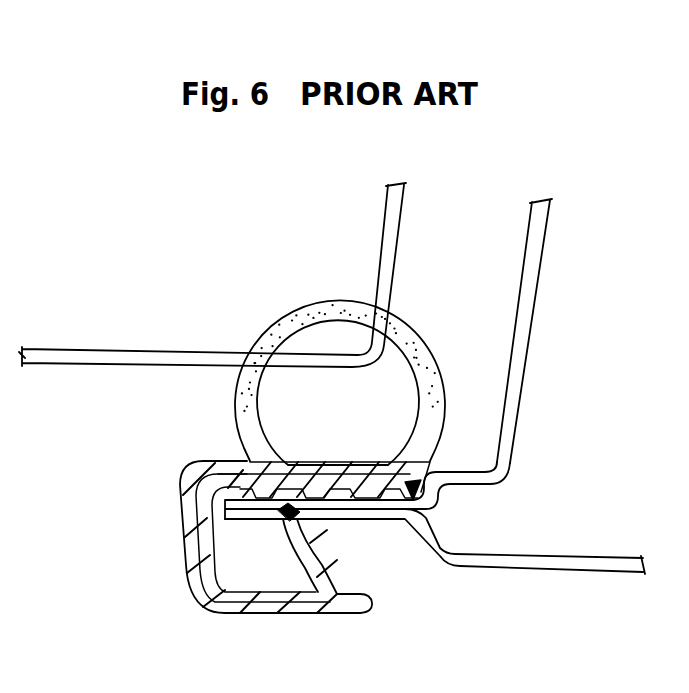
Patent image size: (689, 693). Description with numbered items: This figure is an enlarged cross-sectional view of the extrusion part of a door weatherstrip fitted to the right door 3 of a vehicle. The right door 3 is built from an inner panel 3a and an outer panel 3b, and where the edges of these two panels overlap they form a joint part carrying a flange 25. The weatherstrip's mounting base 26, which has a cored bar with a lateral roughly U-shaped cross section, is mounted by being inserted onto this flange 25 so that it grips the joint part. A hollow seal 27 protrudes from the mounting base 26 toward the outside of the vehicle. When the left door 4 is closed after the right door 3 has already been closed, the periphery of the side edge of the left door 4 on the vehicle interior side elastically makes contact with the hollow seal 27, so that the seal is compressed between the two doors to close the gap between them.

The right door 3 is at (435, 408).
The inner panel 3a is at (518, 312).
The outer panel 3b is at (513, 564).
The left door 4 is at (123, 367).
The flange 25 is at (357, 518).
The mounting base 26 is at (267, 612).
The hollow seal 27 is at (305, 314).